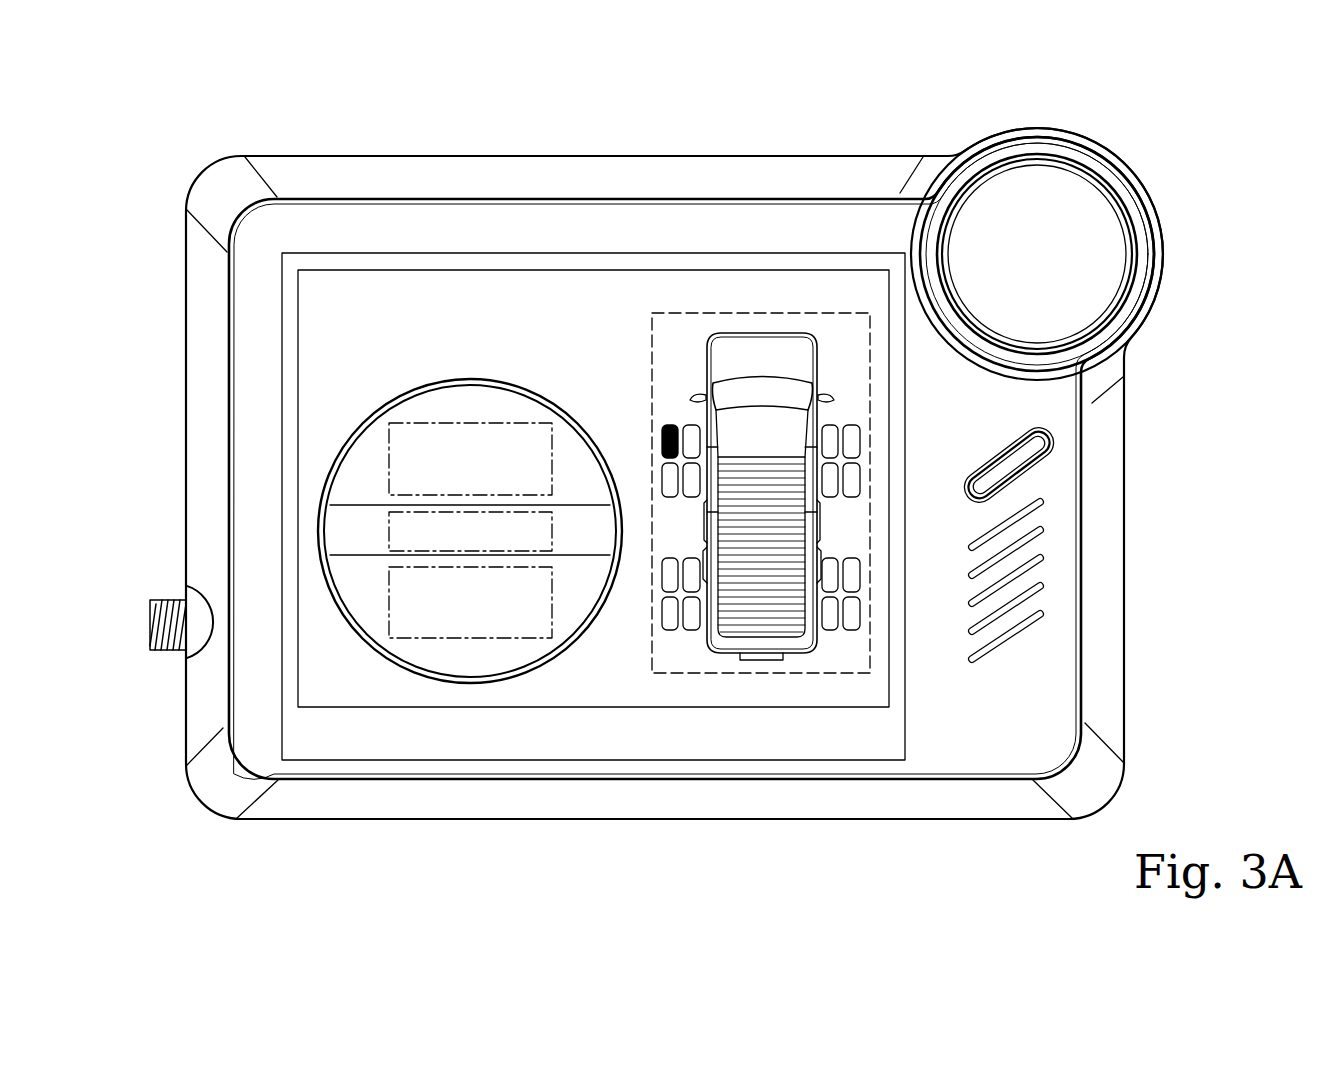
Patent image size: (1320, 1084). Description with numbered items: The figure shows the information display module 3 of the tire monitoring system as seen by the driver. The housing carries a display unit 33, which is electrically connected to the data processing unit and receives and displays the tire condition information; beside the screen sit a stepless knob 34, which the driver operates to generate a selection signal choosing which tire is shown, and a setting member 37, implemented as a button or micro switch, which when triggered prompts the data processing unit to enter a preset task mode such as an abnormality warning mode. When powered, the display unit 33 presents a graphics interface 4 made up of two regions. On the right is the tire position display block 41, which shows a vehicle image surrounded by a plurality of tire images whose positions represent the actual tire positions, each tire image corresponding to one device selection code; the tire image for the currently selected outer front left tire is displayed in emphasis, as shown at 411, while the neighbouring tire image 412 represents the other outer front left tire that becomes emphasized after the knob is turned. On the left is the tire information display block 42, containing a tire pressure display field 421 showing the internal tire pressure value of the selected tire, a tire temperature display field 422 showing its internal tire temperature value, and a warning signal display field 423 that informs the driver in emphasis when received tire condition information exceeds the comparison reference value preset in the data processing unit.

The information display module 3 is at (1124, 650).
The display unit 33 is at (283, 313).
The stepless knob 34 is at (1110, 257).
The setting member 37 is at (1043, 448).
The graphics interface 4 is at (298, 395).
The tire position display block 41 is at (712, 392).
The tire image displayed in emphasis 411 is at (678, 424).
The adjusted emphasized tire image 412 is at (668, 476).
The tire information display block 42 is at (369, 595).
The tire pressure display field 421 is at (449, 423).
The tire temperature display field 422 is at (490, 640).
The warning signal display field 423 is at (389, 530).